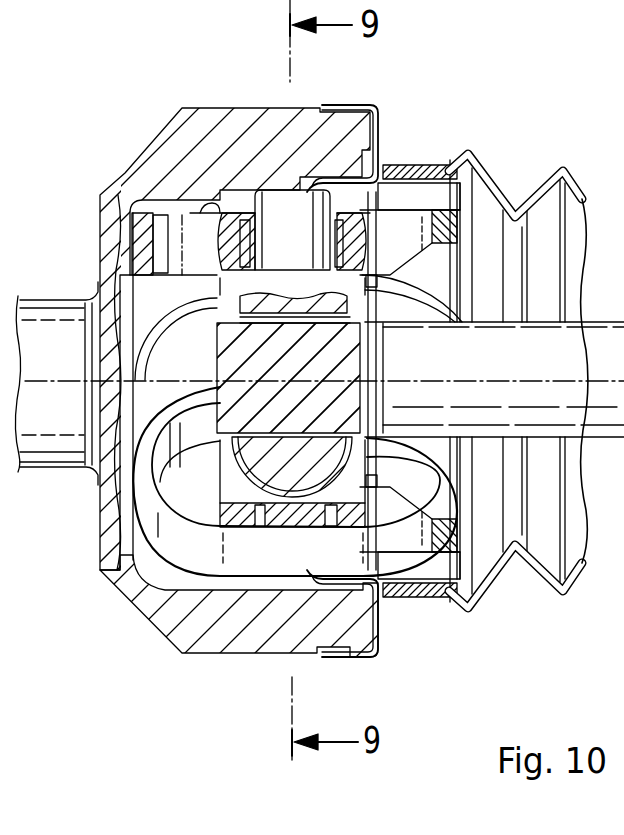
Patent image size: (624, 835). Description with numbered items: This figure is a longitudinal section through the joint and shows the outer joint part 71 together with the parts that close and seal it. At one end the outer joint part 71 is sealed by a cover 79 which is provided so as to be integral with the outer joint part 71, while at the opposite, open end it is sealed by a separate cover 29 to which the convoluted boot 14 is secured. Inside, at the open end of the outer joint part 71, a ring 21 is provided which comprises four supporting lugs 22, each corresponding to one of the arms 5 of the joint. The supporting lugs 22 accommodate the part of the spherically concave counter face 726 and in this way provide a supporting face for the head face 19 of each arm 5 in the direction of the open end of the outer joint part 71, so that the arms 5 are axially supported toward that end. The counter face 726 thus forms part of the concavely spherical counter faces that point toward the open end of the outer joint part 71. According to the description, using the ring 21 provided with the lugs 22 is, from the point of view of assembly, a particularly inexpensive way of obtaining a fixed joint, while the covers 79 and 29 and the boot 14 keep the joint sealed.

The arm 5 is at (278, 240).
The convoluted boot 14 is at (568, 162).
The head face 19 is at (286, 185).
The ring 21 is at (385, 168).
The supporting lugs 22 is at (358, 182).
The cover 29 is at (432, 168).
The outer joint part 71 is at (260, 167).
The cover 79 is at (107, 230).
The spherically concave counter face 726 is at (217, 200).